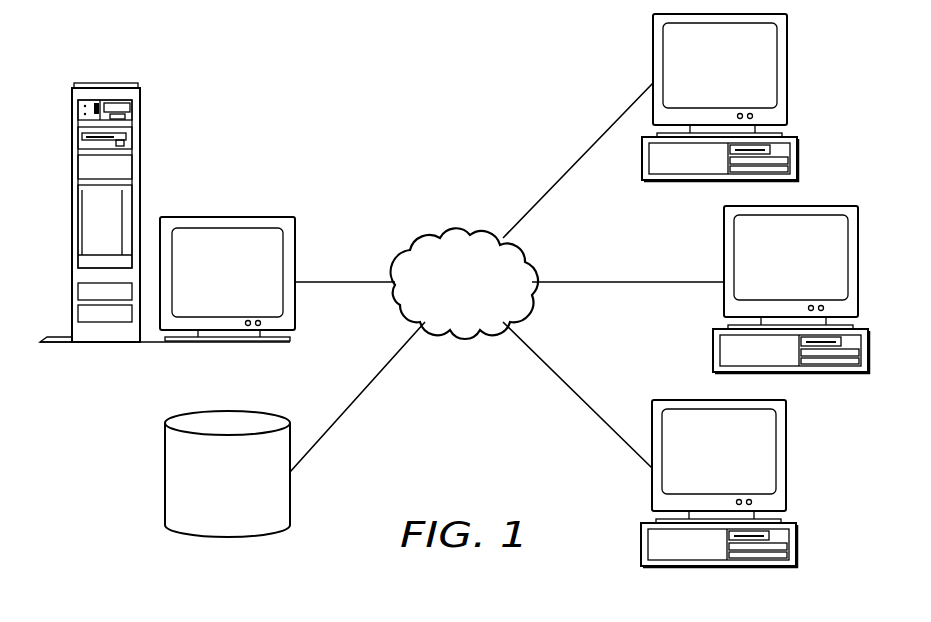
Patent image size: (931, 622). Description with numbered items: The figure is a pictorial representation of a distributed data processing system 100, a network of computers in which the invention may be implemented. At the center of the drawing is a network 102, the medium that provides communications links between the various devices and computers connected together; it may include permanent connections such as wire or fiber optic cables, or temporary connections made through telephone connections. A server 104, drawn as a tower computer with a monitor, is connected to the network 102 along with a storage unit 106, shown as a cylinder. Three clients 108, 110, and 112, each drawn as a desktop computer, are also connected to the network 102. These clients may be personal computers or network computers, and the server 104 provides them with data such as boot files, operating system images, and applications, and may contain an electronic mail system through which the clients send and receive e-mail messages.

The distributed data processing system 100 is at (253, 63).
The network 102 is at (443, 307).
The server 104 is at (210, 282).
The storage unit 106 is at (208, 510).
The client 108 is at (701, 82).
The client 110 is at (791, 301).
The client 112 is at (719, 495).